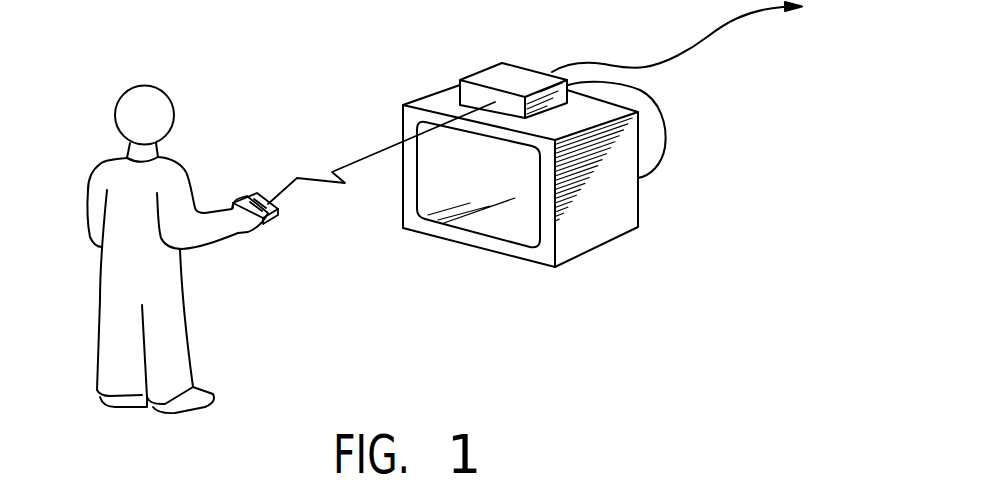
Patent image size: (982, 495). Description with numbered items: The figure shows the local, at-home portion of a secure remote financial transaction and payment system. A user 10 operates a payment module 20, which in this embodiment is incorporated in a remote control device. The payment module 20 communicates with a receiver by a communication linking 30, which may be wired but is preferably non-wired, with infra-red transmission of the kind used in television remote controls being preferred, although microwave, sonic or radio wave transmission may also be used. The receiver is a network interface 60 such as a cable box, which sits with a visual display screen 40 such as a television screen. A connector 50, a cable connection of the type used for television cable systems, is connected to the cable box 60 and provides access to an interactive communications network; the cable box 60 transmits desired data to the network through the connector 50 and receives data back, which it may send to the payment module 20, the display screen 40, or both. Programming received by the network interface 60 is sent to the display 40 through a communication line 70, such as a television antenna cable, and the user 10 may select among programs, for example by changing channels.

The user 10 is at (93, 164).
The payment module 20 is at (276, 224).
The communication linking 30 is at (350, 163).
The visual display screen 40 is at (580, 257).
The connector 50 is at (707, 45).
The network interface 60 is at (512, 63).
The communication line 70 is at (667, 137).